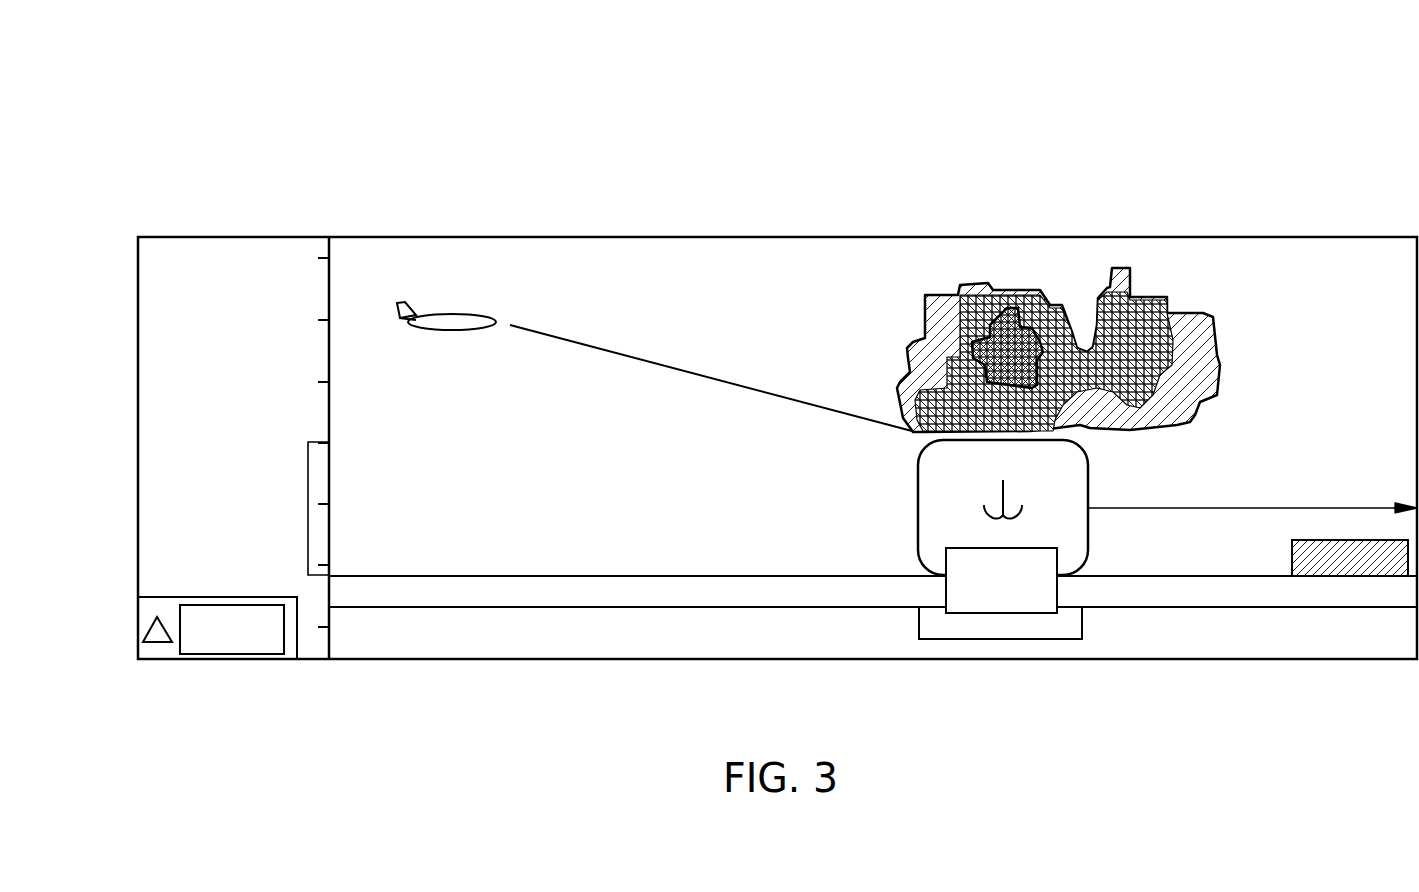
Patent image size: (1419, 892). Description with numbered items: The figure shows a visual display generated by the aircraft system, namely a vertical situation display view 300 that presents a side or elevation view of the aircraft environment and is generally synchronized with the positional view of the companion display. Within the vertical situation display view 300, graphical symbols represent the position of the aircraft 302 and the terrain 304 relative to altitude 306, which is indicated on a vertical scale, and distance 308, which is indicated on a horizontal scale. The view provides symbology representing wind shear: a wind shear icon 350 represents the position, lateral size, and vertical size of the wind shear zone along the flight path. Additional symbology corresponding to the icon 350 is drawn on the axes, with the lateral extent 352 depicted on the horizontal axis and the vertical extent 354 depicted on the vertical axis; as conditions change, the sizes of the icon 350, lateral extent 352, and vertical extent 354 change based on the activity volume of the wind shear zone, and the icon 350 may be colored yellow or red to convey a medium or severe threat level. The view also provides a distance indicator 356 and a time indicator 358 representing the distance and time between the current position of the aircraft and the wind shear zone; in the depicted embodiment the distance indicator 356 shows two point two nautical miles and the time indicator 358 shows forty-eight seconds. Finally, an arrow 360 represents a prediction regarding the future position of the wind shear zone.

The vertical situation display view 300 is at (140, 176).
The aircraft 302 is at (452, 314).
The terrain 304 is at (605, 598).
The altitude 306 is at (330, 354).
The distance 308 is at (1200, 608).
The wind shear icon 350 is at (918, 497).
The lateral extent 352 is at (985, 640).
The vertical extent 354 is at (330, 500).
The distance indicator 356 is at (1030, 565).
The time indicator 358 is at (1033, 600).
The arrow 360 is at (1292, 560).